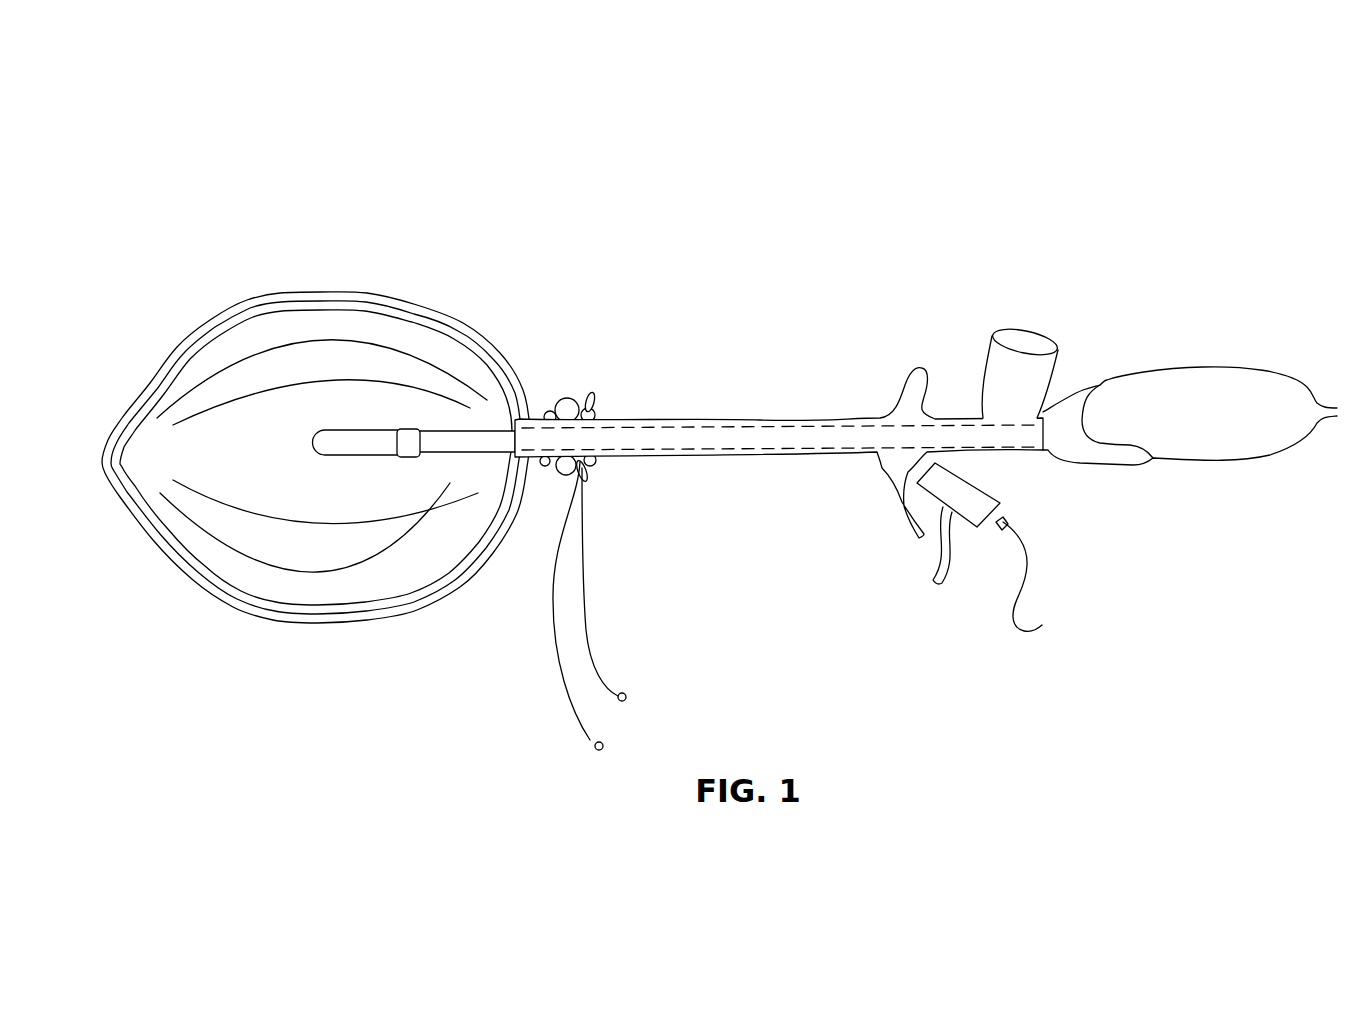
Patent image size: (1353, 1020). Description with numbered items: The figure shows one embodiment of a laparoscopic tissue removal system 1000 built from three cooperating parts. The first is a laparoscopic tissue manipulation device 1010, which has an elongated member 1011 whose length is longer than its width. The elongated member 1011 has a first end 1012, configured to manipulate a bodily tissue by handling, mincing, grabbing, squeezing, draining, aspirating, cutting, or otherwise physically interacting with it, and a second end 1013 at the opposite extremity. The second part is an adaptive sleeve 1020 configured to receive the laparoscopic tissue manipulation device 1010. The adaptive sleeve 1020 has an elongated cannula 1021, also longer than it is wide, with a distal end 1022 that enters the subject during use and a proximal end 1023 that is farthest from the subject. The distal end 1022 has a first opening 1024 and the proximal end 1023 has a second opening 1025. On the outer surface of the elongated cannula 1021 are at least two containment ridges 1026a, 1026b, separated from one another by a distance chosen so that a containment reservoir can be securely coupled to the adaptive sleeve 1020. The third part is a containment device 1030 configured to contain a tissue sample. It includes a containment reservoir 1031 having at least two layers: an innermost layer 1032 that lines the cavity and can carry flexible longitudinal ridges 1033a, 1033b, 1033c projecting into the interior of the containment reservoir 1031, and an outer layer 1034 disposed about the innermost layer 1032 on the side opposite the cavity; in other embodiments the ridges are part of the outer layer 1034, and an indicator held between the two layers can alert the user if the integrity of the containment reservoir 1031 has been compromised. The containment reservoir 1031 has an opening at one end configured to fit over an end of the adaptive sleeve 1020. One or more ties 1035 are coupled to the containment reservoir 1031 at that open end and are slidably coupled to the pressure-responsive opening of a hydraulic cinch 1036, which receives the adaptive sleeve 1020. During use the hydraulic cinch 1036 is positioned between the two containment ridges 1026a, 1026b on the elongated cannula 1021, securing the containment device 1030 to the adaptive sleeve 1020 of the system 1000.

The laparoscopic tissue removal system 1000 is at (1100, 118).
The laparoscopic tissue manipulation device 1010 is at (405, 461).
The elongated member 1011 is at (485, 443).
The first end 1012 is at (455, 462).
The second end 1013 is at (1117, 348).
The adaptive sleeve 1020 is at (820, 369).
The elongated cannula 1021 is at (718, 420).
The distal end 1022 is at (513, 413).
The proximal end 1023 is at (1041, 453).
The first opening 1024 is at (533, 457).
The second opening 1025 is at (1044, 412).
The containment ridge 1026a is at (556, 415).
The containment ridge 1026b is at (600, 398).
The containment device 1030 is at (168, 333).
The containment reservoir 1031 is at (232, 456).
The innermost layer 1032 is at (455, 575).
The flexible longitudinal ridge 1033a is at (320, 517).
The flexible longitudinal ridge 1033b is at (371, 378).
The flexible longitudinal ridge 1033c is at (408, 350).
The outer layer 1034 is at (370, 618).
The ties 1035 is at (584, 592).
The hydraulic cinch 1036 is at (583, 468).